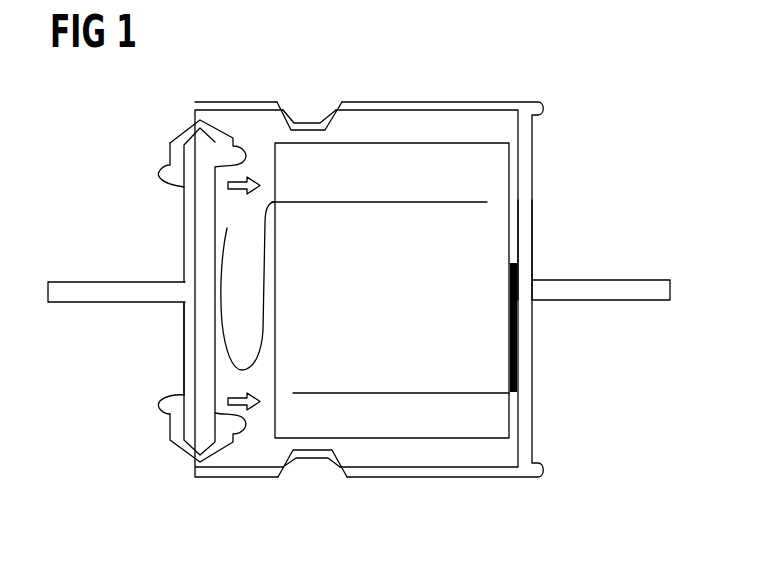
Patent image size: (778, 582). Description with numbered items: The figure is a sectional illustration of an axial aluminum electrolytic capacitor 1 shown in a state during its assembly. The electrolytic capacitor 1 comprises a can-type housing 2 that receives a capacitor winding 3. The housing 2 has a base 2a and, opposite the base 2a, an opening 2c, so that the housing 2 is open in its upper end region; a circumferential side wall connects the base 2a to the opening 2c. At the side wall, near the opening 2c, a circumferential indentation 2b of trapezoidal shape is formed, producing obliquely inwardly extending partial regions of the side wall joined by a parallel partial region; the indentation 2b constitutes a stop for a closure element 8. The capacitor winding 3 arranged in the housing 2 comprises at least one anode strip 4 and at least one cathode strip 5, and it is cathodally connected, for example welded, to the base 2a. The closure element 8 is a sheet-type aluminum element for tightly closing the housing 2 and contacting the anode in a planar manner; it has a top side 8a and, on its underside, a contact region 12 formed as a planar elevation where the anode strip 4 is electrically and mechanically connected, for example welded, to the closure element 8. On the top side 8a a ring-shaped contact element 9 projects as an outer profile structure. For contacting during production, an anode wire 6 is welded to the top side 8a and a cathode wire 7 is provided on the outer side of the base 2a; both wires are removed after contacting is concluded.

The electrolytic capacitor 1 is at (578, 86).
The housing 2 is at (443, 103).
The base 2a is at (532, 230).
The indentation 2b is at (290, 120).
The opening 2c is at (195, 473).
The capacitor winding 3 is at (500, 168).
The anode strip 4 is at (390, 203).
The cathode strip 5 is at (388, 392).
The anode wire 6 is at (70, 293).
The cathode wire 7 is at (632, 290).
The closure element 8 is at (156, 224).
The top side 8a is at (182, 358).
The contact element 9 is at (160, 402).
The contact region 12 is at (213, 290).